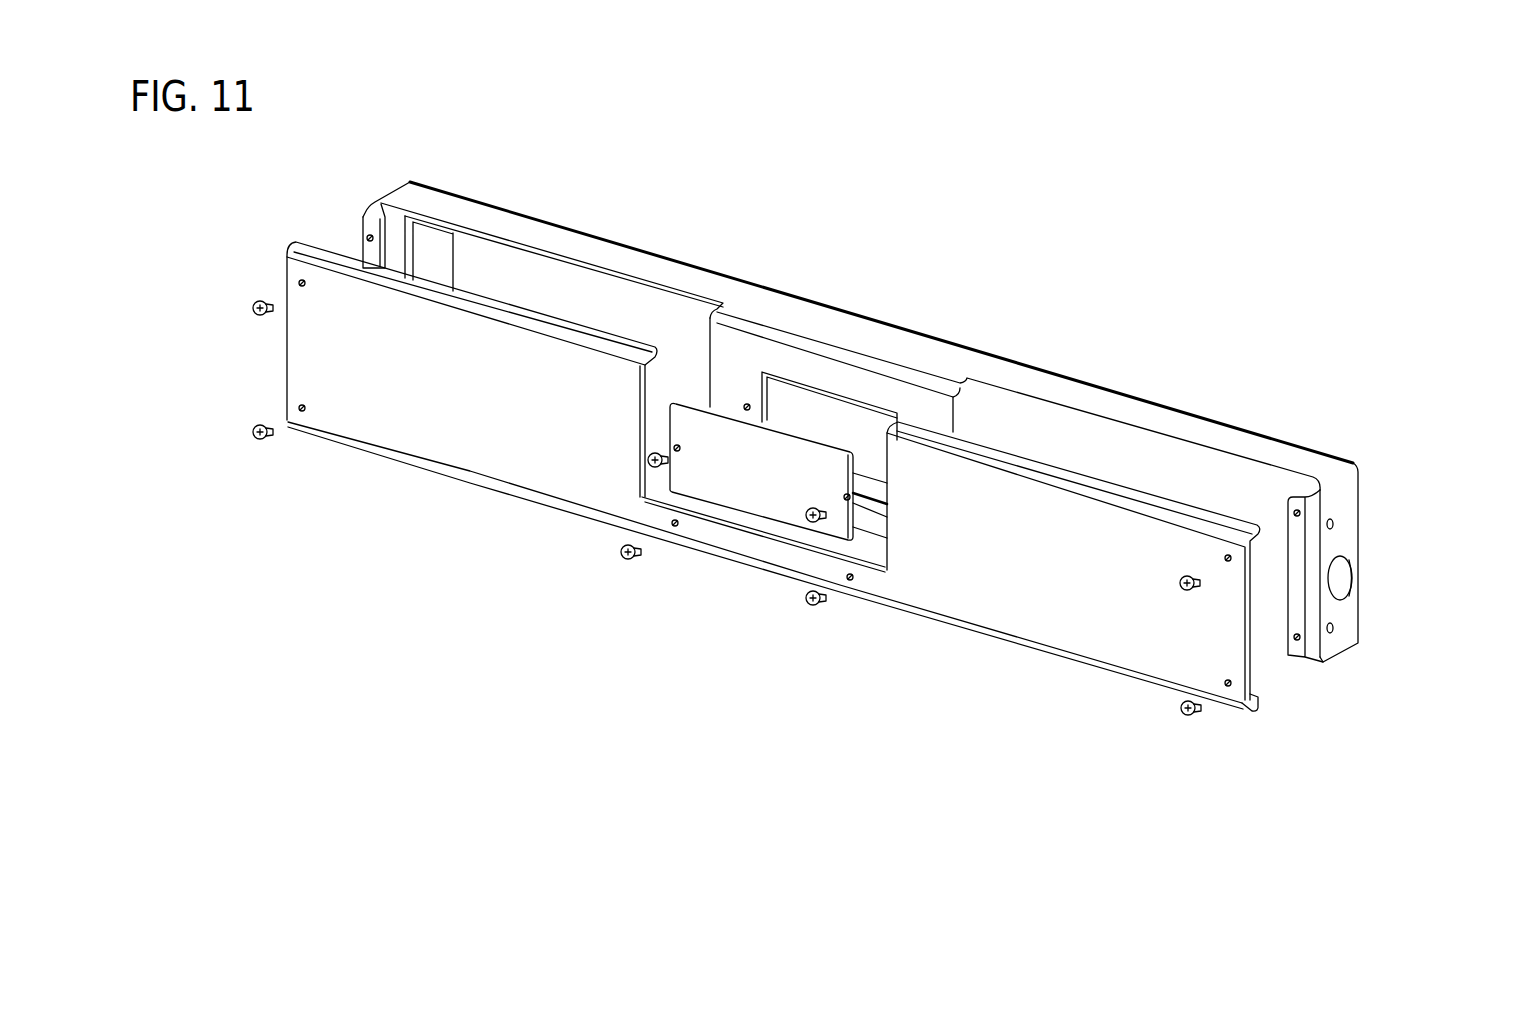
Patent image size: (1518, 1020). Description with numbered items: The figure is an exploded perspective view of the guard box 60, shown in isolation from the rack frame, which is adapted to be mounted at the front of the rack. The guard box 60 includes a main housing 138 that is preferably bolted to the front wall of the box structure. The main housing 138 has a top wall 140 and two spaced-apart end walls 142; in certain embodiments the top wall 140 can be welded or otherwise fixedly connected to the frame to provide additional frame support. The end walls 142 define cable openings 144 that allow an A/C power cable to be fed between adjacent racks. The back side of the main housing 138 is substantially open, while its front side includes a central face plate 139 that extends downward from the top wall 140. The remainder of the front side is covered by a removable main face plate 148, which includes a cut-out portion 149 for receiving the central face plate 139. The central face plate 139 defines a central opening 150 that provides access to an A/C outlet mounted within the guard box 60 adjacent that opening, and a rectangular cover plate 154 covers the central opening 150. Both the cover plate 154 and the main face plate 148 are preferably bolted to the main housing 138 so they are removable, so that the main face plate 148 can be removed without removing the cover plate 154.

The guard box 60 is at (718, 198).
The main housing 138 is at (785, 292).
The central face plate 139 is at (740, 370).
The top wall 140 is at (478, 220).
The end walls 142 is at (363, 215).
The cable openings 144 is at (1353, 577).
The main face plate 148 is at (917, 568).
The cut-out portion 149 is at (640, 403).
The central opening 150 is at (863, 403).
The cover plate 154 is at (750, 481).